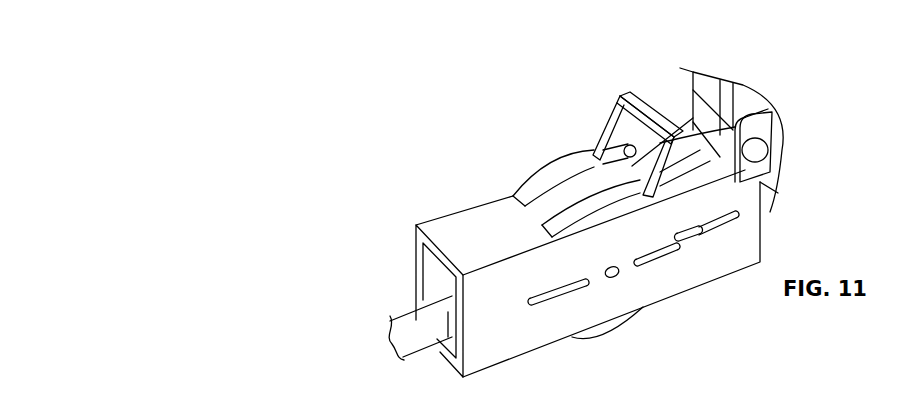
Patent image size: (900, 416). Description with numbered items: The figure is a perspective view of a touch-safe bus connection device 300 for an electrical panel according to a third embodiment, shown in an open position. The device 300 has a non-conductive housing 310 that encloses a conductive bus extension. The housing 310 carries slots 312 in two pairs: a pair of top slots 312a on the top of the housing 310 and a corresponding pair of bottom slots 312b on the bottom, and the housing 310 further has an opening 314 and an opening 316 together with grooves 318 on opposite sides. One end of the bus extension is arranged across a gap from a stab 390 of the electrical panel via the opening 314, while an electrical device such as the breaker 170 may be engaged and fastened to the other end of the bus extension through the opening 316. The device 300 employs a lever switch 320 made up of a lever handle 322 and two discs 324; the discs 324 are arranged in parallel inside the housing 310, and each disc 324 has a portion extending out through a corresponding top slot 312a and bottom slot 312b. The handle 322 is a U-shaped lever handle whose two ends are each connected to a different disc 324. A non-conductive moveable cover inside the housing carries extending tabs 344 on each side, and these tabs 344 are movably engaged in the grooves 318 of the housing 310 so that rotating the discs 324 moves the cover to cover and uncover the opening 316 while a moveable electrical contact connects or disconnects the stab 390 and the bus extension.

The touch-safe bus connection device 300 is at (337, 113).
The housing 310 is at (504, 350).
The top plate 312 is at (542, 225).
The slots 312a is at (752, 129).
The slots 312b is at (598, 338).
The opening 314 is at (432, 289).
The opening 316 is at (769, 161).
The grooves 318 is at (664, 258).
The lever switch 320 is at (584, 145).
The lever handle 322 is at (632, 94).
The discs 324 is at (543, 175).
The tabs 344 is at (696, 240).
The stab 390 is at (402, 332).
The breaker 170 is at (753, 100).